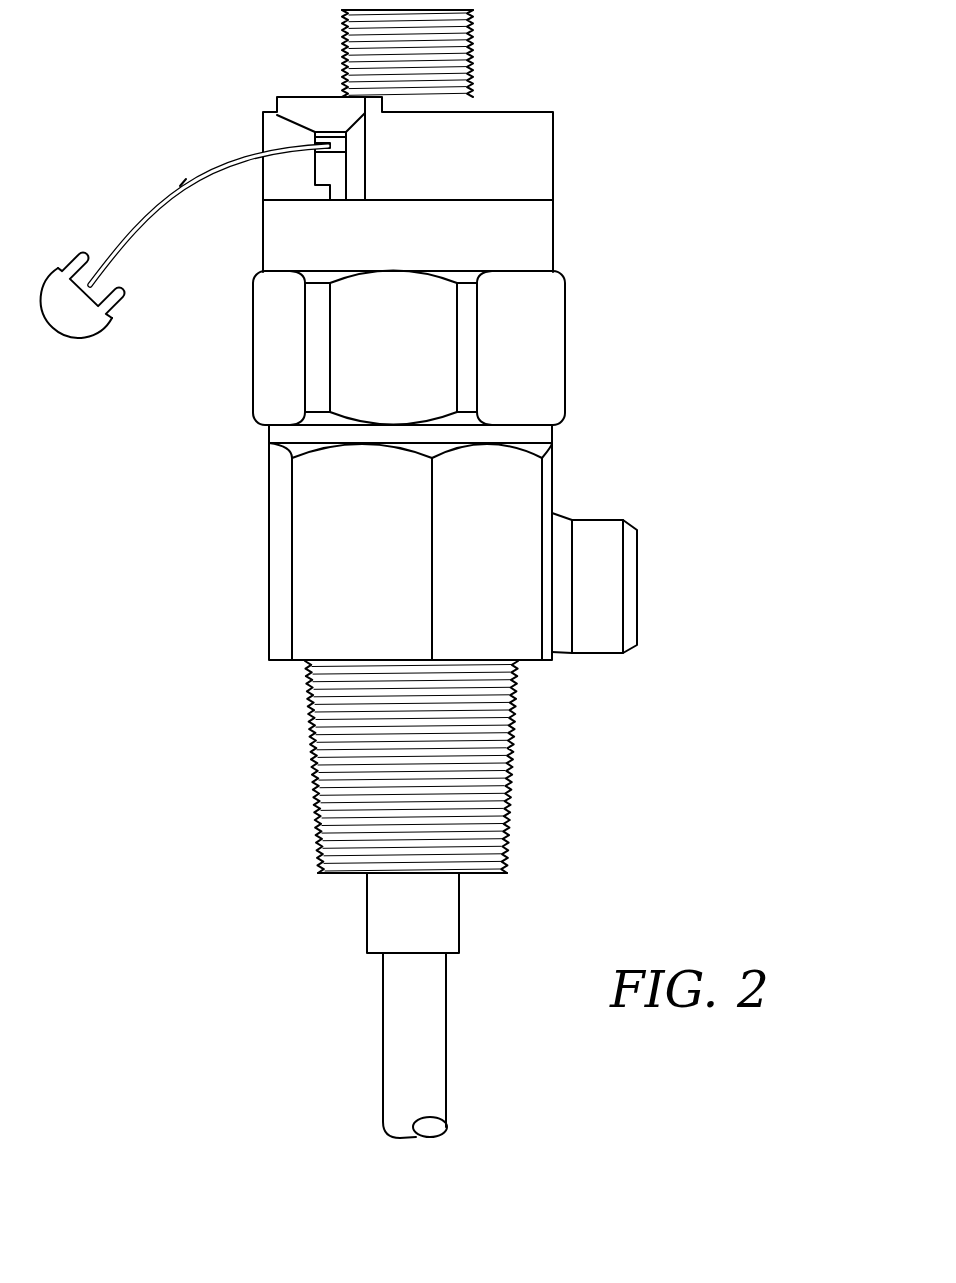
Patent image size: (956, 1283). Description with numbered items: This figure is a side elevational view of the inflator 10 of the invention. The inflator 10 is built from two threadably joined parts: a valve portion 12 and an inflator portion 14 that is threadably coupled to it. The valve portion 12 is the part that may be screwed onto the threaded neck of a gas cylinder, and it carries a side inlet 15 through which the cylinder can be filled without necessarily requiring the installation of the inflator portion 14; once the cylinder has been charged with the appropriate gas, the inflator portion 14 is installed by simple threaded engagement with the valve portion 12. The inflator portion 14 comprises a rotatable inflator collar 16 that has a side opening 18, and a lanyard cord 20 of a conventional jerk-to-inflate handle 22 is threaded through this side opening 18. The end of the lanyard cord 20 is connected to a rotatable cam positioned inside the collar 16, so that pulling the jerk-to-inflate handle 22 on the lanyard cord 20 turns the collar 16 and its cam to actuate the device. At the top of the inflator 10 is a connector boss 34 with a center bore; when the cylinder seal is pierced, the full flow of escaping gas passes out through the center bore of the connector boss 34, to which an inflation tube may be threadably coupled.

The inflator 10 is at (656, 108).
The valve portion 12 is at (269, 580).
The inflator portion 14 is at (565, 317).
The inlet 15 is at (637, 570).
The rotatable inflator collar 16 is at (553, 158).
The side opening 18 is at (335, 162).
The lanyard cord 20 is at (163, 195).
The jerk-to-inflate handle 22 is at (102, 330).
The connector boss 34 is at (473, 78).